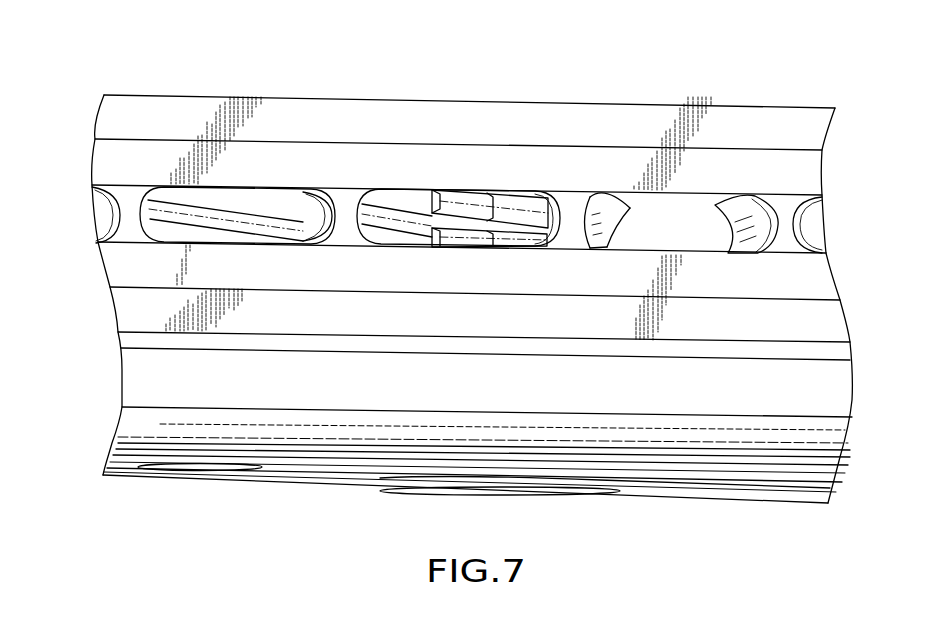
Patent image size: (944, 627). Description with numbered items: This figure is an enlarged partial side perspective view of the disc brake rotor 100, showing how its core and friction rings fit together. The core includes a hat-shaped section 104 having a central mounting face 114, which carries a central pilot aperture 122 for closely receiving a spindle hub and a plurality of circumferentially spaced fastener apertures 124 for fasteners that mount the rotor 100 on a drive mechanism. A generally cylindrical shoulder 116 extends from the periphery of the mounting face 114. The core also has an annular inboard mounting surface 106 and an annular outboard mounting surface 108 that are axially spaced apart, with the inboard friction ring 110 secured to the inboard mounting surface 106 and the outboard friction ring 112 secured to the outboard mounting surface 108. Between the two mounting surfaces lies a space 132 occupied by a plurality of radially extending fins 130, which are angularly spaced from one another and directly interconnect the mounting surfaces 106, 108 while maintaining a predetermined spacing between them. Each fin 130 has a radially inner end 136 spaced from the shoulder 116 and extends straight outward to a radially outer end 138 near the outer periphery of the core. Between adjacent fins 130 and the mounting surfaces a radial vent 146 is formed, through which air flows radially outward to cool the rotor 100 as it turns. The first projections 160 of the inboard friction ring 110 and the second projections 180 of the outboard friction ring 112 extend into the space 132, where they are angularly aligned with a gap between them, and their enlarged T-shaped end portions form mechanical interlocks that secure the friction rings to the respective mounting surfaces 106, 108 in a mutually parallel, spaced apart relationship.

The disc brake rotor 100 is at (153, 525).
The hat-shaped section 104 is at (808, 402).
The inboard mounting surface 106 is at (295, 165).
The outboard mounting surface 108 is at (790, 272).
The inboard friction ring 110 is at (457, 113).
The outboard friction ring 112 is at (145, 305).
The central mounting face 114 is at (332, 472).
The shoulder 116 is at (152, 382).
The central pilot aperture 122 is at (763, 490).
The fastener apertures 124 is at (215, 472).
The fins 130 is at (133, 203).
The space 132 is at (665, 212).
The radially inner end 136 is at (310, 208).
The radially outer end 138 is at (343, 200).
The vent 146 is at (688, 241).
The first projections 160 is at (460, 197).
The second projections 180 is at (457, 243).